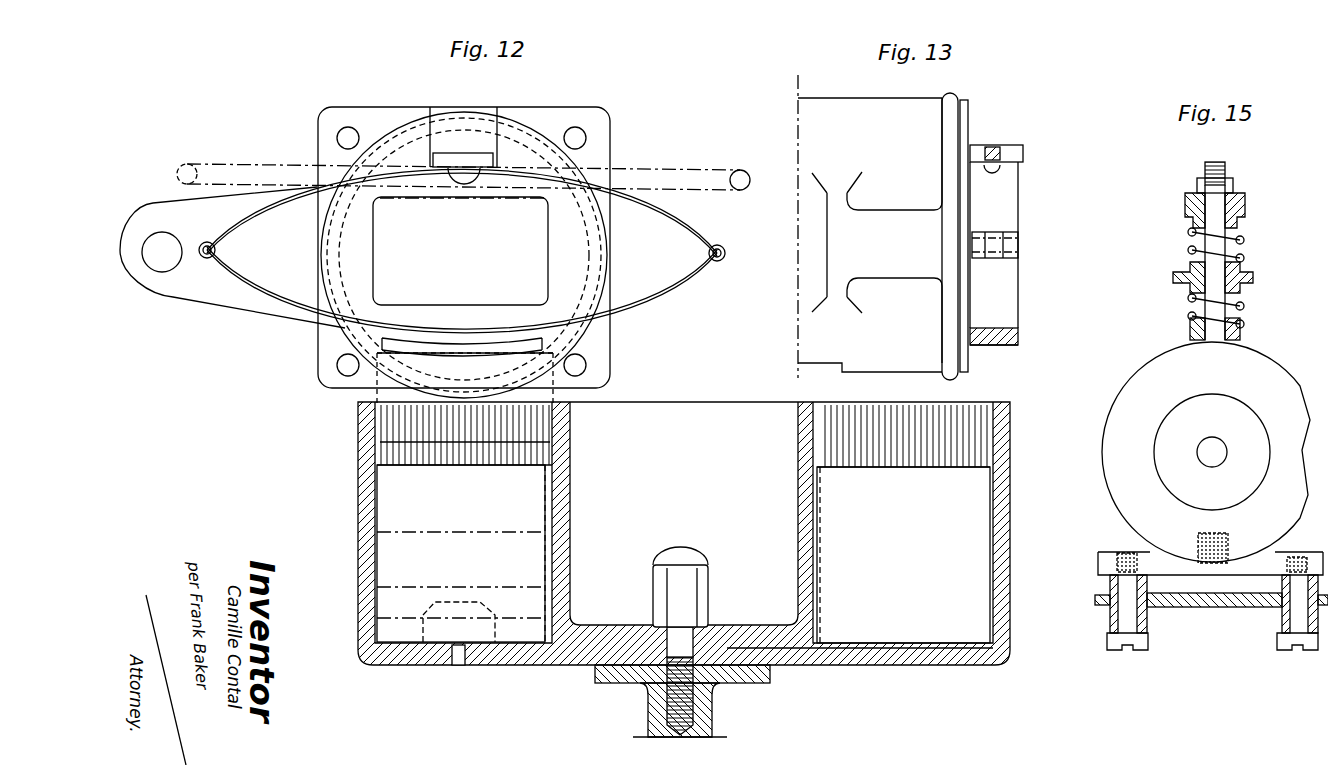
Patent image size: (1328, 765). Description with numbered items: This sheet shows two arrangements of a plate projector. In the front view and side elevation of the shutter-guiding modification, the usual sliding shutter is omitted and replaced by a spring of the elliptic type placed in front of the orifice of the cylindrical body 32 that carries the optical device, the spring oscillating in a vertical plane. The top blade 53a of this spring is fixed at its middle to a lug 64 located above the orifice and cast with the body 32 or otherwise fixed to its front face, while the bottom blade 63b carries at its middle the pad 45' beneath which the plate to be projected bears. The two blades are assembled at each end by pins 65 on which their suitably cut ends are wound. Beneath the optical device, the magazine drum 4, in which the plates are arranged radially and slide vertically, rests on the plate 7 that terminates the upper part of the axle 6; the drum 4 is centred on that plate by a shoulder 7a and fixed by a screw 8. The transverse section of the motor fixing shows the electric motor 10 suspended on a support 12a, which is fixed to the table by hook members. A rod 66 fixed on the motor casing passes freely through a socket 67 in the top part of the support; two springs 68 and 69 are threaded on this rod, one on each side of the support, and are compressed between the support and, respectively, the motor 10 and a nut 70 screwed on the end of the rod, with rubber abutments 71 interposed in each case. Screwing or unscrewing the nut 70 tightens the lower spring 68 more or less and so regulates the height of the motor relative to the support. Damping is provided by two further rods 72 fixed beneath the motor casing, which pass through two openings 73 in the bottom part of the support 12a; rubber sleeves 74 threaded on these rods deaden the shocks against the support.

In FIG. 12, the magazine drum 4 is at (558, 510).
In FIG. 12, the axle 6 is at (706, 722).
In FIG. 12, the plate 7 is at (758, 683).
In FIG. 12, the shoulder 7a is at (712, 688).
In FIG. 12, the screw 8 is at (683, 555).
In FIG. 15, the electric motor 10 is at (1206, 452).
In FIG. 15, the support 12a is at (1216, 605).
In FIG. 12, the cylindrical body 32 is at (463, 134).
In FIG. 13, the cylindrical body 32 is at (877, 230).
In FIG. 12, the pad 45' is at (462, 334).
In FIG. 13, the pad 45' is at (994, 356).
In FIG. 12, the top blade 53a is at (630, 204).
In FIG. 13, the top blade 53a is at (990, 172).
In FIG. 12, the bottom blade 63b is at (283, 302).
In FIG. 13, the bottom blade 63b is at (1000, 330).
In FIG. 12, the lug 64 is at (437, 162).
In FIG. 13, the lug 64 is at (1012, 150).
In FIG. 12, the pins 65 is at (718, 262).
In FIG. 13, the pins 65 is at (1010, 265).
In FIG. 15, the rod 66 is at (1220, 308).
In FIG. 15, the socket 67 is at (1175, 272).
In FIG. 15, the lower spring 68 is at (1190, 305).
In FIG. 15, the upper spring 69 is at (1190, 237).
In FIG. 15, the nut 70 is at (1197, 183).
In FIG. 15, the rubber abutments 71 is at (1188, 205).
In FIG. 15, the damping rods 72 is at (1125, 620).
In FIG. 15, the openings 73 is at (1150, 607).
In FIG. 15, the rubber sleeves 74 is at (1113, 583).